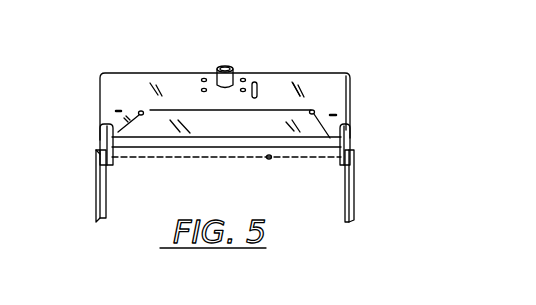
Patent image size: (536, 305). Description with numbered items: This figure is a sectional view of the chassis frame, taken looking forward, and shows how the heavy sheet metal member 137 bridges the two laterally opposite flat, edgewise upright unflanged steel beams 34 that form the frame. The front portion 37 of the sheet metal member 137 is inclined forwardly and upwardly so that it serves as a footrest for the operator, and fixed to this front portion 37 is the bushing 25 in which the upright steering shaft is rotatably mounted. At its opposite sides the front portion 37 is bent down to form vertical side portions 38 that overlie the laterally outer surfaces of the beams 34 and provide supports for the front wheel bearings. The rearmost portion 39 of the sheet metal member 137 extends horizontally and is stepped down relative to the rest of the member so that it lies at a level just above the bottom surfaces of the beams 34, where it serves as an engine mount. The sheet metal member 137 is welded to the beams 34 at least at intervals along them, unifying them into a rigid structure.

The sheet metal member 137 is at (352, 76).
The bushing 25 is at (236, 67).
The front portion 37 is at (296, 83).
The rearmost portion 39 is at (269, 159).
The beams 34 is at (100, 136).
The side portions 38 is at (96, 187).